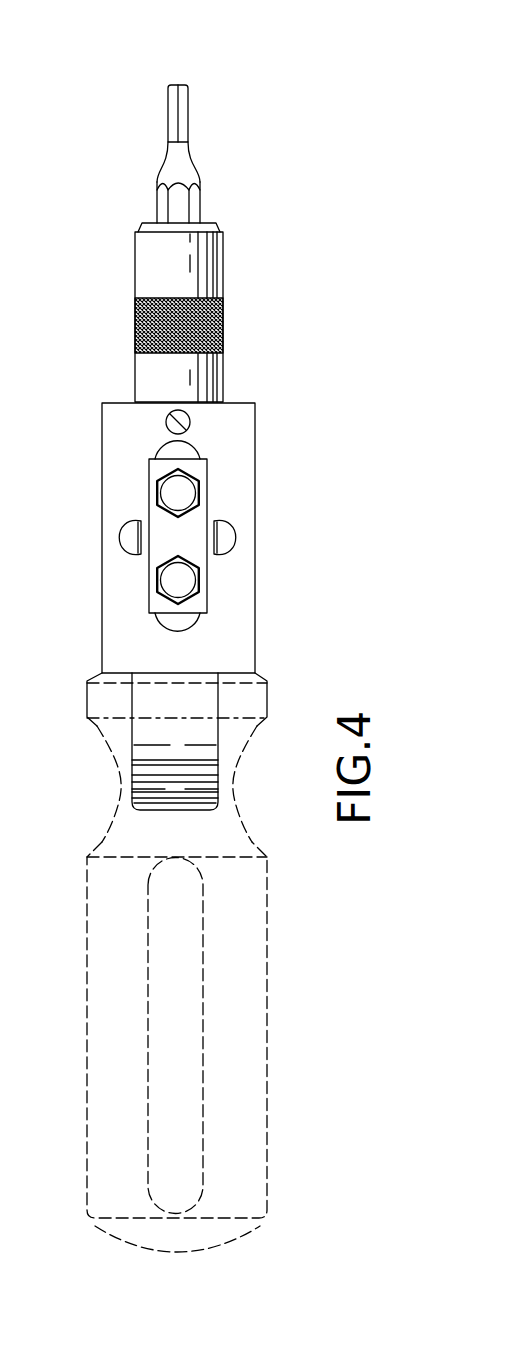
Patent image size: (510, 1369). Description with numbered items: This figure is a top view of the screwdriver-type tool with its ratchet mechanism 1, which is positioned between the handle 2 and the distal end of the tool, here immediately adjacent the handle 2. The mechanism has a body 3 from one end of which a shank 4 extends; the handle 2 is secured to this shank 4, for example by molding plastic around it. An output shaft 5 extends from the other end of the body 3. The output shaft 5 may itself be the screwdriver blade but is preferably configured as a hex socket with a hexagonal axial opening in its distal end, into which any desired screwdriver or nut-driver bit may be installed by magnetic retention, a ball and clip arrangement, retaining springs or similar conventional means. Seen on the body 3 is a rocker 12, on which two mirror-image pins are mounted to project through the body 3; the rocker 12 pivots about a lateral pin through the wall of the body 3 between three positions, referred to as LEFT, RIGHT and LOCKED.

The ratchet mechanism 1 is at (53, 556).
The handle 2 is at (98, 912).
The body 3 is at (112, 443).
The shank 4 is at (137, 732).
The output shaft 5 is at (146, 268).
The rocker 12 is at (173, 540).